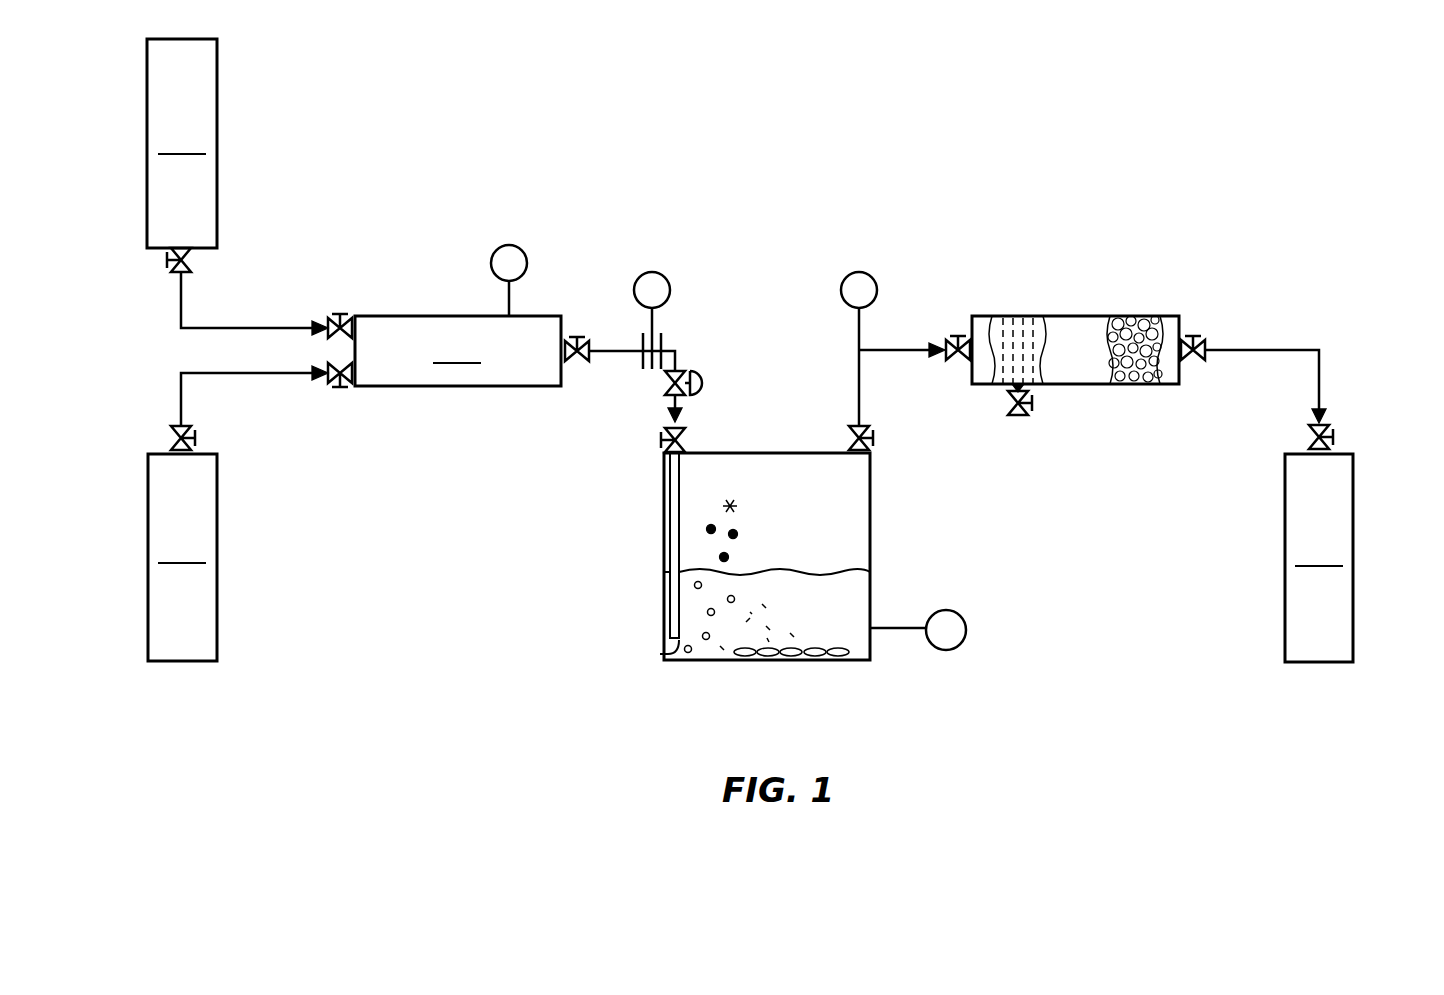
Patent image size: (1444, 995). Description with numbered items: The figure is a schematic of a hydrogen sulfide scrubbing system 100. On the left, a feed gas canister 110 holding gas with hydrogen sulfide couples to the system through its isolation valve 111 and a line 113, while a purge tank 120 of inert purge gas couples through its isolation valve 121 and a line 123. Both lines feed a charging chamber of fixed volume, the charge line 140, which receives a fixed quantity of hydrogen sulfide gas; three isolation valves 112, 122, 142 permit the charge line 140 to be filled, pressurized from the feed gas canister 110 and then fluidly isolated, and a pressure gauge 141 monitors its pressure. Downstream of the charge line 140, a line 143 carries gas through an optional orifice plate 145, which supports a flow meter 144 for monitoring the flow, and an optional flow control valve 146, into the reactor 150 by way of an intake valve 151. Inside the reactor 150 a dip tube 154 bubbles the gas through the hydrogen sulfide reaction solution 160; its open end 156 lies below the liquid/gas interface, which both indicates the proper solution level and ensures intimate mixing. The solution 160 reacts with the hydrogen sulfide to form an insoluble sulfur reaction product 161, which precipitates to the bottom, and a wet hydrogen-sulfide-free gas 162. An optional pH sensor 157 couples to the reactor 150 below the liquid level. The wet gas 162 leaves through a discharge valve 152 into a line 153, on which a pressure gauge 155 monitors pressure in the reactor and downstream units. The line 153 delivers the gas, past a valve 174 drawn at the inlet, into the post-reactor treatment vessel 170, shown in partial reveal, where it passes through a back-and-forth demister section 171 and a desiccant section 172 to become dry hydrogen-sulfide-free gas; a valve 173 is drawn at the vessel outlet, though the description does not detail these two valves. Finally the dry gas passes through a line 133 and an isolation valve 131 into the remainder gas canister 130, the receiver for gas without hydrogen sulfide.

The H2S scrubbing system 100 is at (1176, 50).
The feed gas canister 110 is at (182, 557).
The isolation valve 111 is at (197, 436).
The isolation valve 112 is at (345, 390).
The line 113 is at (292, 375).
The purge tank 120 is at (182, 143).
The isolation valve 121 is at (168, 262).
The isolation valve 122 is at (338, 312).
The line 123 is at (292, 326).
The remainder gas canister 130 is at (1319, 558).
The isolation valve 131 is at (1337, 436).
The line 133 is at (1283, 350).
The charge line 140 is at (458, 351).
The pressure gauge 141 is at (509, 244).
The isolation valve 142 is at (577, 335).
The line 143 is at (675, 352).
The flow meter 144 is at (652, 271).
The orifice plate 145 is at (643, 358).
The flow control valve 146 is at (704, 385).
The reactor 150 is at (771, 596).
The intake valve 151 is at (659, 437).
The discharge valve 152 is at (876, 437).
The line 153 is at (905, 352).
The dip tube 154 is at (670, 530).
The pressure gauge 155 is at (862, 270).
The open end 156 is at (660, 654).
The pH sensor 157 is at (950, 608).
The H2S reaction solution 160 is at (860, 580).
The insoluble sulfur reaction product 161 is at (665, 680).
The wet H2S-free gas 162 is at (860, 533).
The post-reactor treatment vessel 170 is at (1076, 295).
The back-and-forth demister section 171 is at (1022, 318).
The desiccant section 172 is at (1141, 313).
The filter outlet valve 173 is at (1200, 335).
The filter inlet valve 174 is at (958, 333).